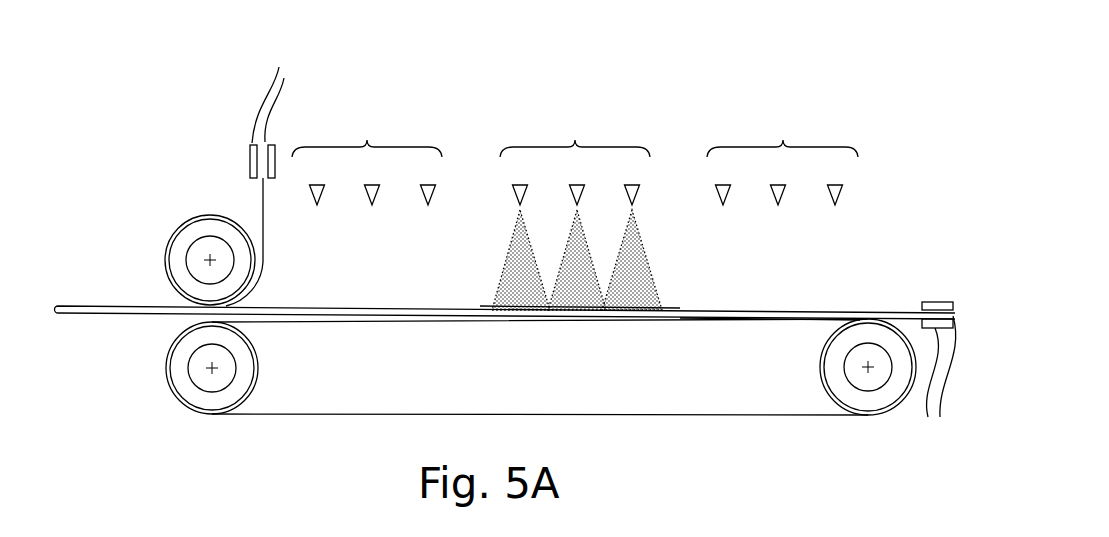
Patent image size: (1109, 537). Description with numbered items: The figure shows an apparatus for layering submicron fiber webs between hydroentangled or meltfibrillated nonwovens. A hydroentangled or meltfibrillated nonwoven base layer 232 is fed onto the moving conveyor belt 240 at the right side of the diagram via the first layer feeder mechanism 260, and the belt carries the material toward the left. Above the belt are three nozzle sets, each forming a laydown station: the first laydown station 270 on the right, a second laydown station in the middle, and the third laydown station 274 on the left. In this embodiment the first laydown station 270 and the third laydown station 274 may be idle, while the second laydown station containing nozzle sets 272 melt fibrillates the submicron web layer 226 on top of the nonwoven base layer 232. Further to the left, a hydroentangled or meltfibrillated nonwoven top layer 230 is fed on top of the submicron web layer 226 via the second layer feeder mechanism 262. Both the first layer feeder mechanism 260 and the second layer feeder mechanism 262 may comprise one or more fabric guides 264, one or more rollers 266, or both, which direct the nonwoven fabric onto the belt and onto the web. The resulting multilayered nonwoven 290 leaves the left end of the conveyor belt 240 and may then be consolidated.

The submicron web layer 226 is at (577, 311).
The hydroentangled or meltfibrillated nonwoven top layer 230 is at (265, 218).
The hydroentangled or meltfibrillated nonwoven base layer 232 is at (757, 316).
The moving conveyor belt 240 is at (367, 414).
The first layer feeder mechanism 260 is at (933, 300).
The second layer feeder mechanism 262 is at (250, 168).
The fabric guide 264 is at (608, 246).
The roller 266 is at (165, 252).
The first laydown station 270 is at (782, 142).
The nozzle sets 272 is at (577, 195).
The third laydown station 274 is at (367, 142).
The multilayered nonwoven 290 is at (115, 318).